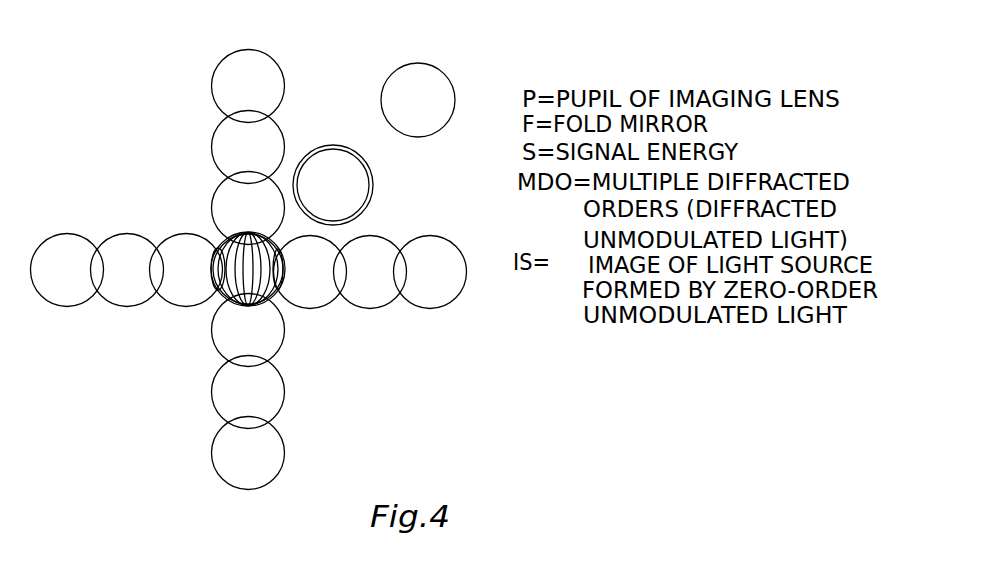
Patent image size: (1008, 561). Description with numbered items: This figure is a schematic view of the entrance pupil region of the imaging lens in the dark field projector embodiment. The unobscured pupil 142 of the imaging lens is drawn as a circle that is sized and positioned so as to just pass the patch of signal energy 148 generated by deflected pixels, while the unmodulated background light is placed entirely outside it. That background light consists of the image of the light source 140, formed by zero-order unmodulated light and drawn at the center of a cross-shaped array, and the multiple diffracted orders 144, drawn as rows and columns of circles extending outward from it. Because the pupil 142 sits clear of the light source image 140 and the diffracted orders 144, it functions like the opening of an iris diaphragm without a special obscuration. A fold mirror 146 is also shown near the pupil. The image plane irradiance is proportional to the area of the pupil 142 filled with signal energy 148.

The image of light source 140 is at (217, 295).
The pupil of imaging lens 142 is at (368, 206).
The multiple diffracted orders 144 is at (211, 78).
The fold mirror 146 is at (453, 93).
The signal energy 148 is at (372, 180).